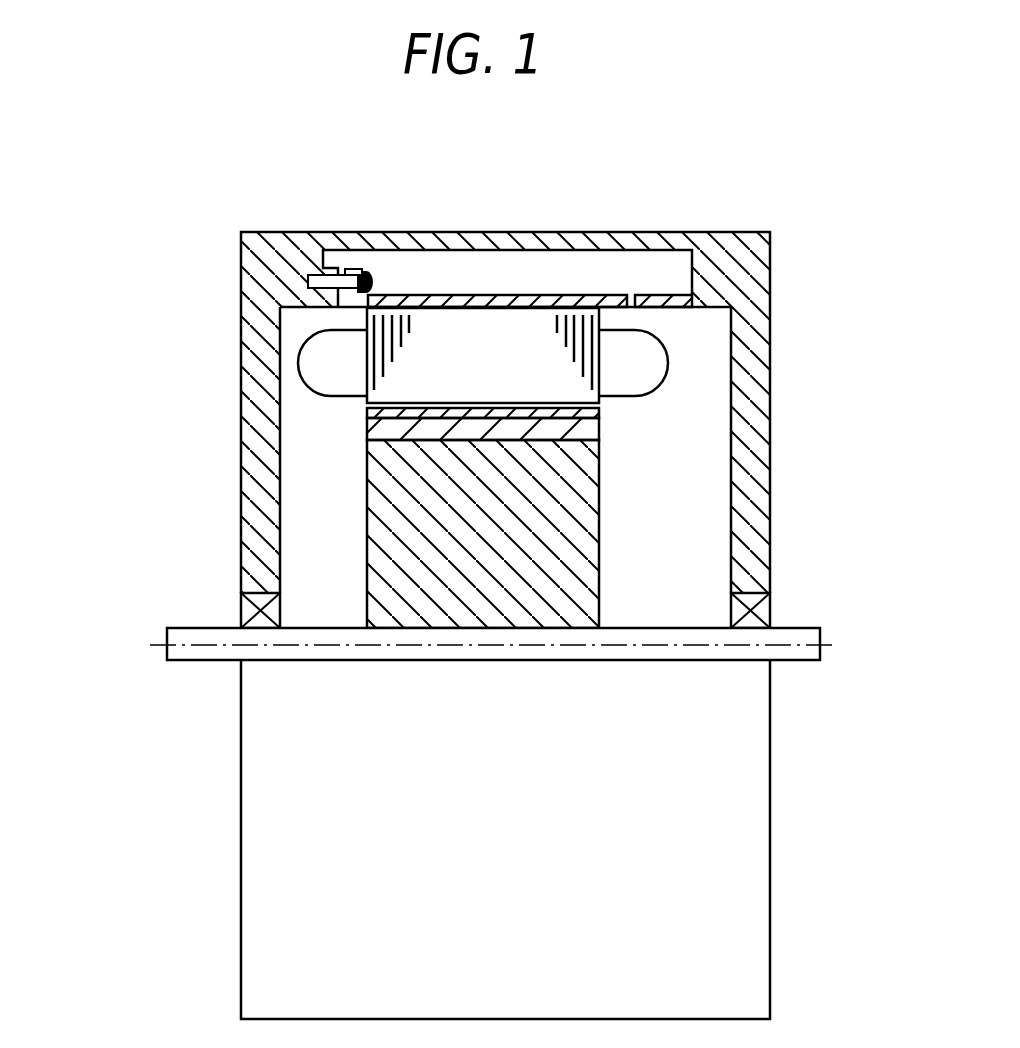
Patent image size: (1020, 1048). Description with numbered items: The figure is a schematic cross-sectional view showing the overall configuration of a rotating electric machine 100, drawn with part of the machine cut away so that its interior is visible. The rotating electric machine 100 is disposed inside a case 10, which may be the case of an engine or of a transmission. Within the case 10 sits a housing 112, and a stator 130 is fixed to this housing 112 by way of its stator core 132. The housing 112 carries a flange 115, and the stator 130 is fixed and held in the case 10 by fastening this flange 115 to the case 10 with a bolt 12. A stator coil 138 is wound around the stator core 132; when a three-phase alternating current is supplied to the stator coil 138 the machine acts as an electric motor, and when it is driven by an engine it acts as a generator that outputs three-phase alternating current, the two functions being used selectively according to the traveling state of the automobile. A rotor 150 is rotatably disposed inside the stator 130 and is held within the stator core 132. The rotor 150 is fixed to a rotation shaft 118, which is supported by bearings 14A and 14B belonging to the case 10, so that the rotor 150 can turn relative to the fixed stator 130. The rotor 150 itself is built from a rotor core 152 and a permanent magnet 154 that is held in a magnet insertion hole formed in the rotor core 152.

The case 10 is at (258, 350).
The bolt 12 is at (318, 276).
The flange 115 is at (348, 269).
The housing 112 is at (477, 300).
The rotating electric machine 100 is at (610, 285).
The stator core 132 is at (400, 387).
The stator coil 138 is at (322, 358).
The stator 130 is at (676, 363).
The permanent magnet 154 is at (597, 425).
The rotor 150 is at (612, 505).
The rotor core 152 is at (385, 567).
The bearing 14A is at (250, 611).
The bearing 14B is at (758, 610).
The rotation shaft 118 is at (192, 652).